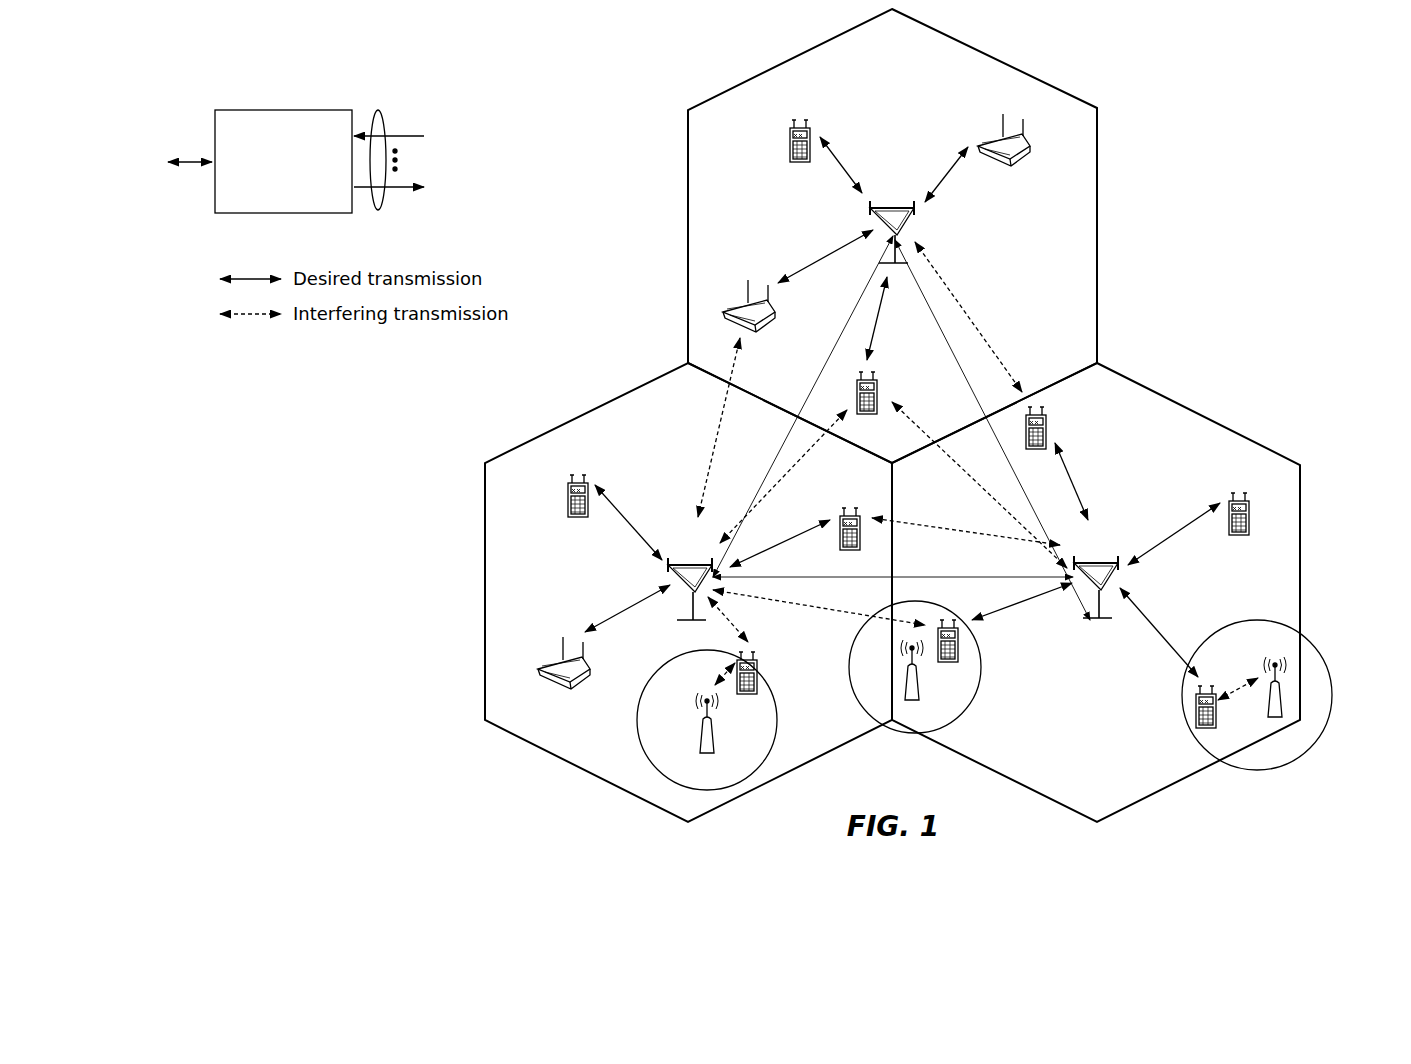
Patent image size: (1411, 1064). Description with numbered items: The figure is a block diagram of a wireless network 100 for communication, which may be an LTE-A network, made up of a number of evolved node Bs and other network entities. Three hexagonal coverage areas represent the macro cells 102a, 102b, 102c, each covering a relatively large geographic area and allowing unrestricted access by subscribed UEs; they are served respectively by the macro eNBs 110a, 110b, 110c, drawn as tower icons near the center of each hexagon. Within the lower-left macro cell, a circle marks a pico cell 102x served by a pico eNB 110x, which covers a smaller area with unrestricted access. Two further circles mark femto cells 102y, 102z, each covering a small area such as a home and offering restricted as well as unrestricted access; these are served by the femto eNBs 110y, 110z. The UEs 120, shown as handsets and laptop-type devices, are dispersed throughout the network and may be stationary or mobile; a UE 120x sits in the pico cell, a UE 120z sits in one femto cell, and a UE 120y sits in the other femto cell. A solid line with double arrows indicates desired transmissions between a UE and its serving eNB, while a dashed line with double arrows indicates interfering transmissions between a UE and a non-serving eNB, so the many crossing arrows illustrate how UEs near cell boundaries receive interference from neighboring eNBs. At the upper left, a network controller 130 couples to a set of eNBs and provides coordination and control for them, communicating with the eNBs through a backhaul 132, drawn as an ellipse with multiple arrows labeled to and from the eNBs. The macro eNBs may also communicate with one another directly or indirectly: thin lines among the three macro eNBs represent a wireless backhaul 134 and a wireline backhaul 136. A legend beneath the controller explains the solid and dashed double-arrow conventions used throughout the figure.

The wireless network 100 is at (1240, 69).
The macro cell 102a is at (995, 58).
The macro cell 102b is at (570, 416).
The macro cell 102c is at (1200, 418).
The pico cell 102x is at (655, 672).
The femto cell 102y is at (858, 636).
The femto cell 102z is at (1255, 620).
The macro eNB 110a is at (890, 206).
The macro eNB 110b is at (680, 563).
The macro eNB 110c is at (1094, 562).
The pico eNB 110x is at (715, 744).
The femto eNB 110y is at (920, 692).
The femto eNB 110z is at (1283, 708).
The UE 120 is at (790, 140).
The UE 120x is at (762, 668).
The UE 120y is at (1200, 728).
The UE 120z is at (960, 660).
The network controller 130 is at (283, 108).
The backhaul 132 is at (388, 110).
The wireless backhaul 134 is at (798, 396).
The wireline backhaul 136 is at (960, 396).